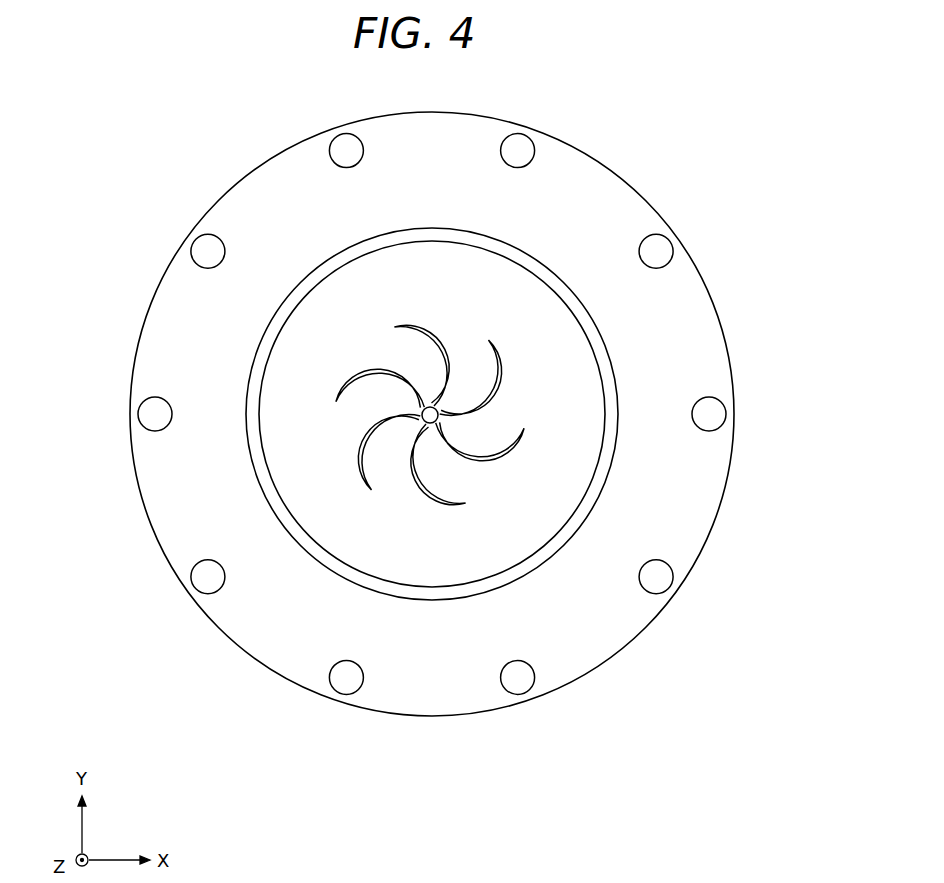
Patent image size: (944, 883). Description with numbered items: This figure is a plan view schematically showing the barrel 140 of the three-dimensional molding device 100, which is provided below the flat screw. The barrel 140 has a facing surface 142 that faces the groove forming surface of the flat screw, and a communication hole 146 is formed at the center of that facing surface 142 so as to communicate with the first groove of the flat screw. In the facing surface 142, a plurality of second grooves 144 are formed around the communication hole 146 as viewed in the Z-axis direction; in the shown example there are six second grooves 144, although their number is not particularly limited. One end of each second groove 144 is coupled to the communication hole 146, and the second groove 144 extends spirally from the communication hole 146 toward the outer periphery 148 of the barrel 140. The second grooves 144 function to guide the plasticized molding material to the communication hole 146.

The substrate processing apparatus 100 is at (702, 103).
The barrel 140 is at (641, 158).
The facing surface 142 is at (466, 603).
The second groove 144 is at (414, 333).
The communication hole 146 is at (400, 417).
The outer periphery 148 is at (170, 568).